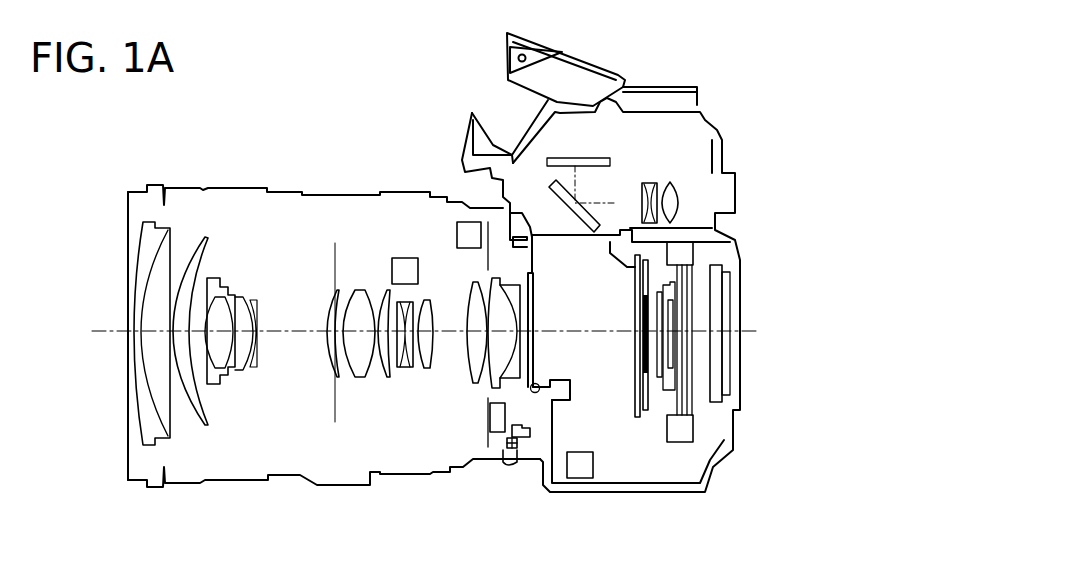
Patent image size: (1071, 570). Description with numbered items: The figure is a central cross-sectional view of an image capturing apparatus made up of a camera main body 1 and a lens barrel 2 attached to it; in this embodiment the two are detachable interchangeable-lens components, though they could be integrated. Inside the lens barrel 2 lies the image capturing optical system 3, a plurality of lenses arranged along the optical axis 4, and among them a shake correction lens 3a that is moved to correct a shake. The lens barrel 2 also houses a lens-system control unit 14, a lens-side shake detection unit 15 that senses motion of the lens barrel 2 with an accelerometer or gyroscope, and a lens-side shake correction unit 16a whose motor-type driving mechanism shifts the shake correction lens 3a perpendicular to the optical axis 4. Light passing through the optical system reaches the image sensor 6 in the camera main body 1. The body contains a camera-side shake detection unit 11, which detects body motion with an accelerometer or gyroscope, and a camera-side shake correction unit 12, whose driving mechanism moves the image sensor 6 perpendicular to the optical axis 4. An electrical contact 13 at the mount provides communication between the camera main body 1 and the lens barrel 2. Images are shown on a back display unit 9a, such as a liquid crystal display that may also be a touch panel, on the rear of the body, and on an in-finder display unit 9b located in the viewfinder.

The camera main body 1 is at (708, 107).
The lens barrel 2 is at (263, 187).
The image capturing optical system 3 is at (263, 456).
The shake correction lens 3a is at (403, 374).
The optical axis 4 is at (98, 335).
The image sensor 6 is at (677, 353).
The back display unit 9a is at (727, 373).
The in-finder display unit 9b is at (683, 190).
The camera-side shake detection unit 11 is at (582, 478).
The camera-side shake correction unit 12 is at (682, 442).
The electrical contact 13 is at (517, 440).
The lens-system control unit 14 is at (488, 417).
The lens-side shake detection unit 15 is at (467, 222).
The lens-side shake correction unit 16a is at (406, 258).